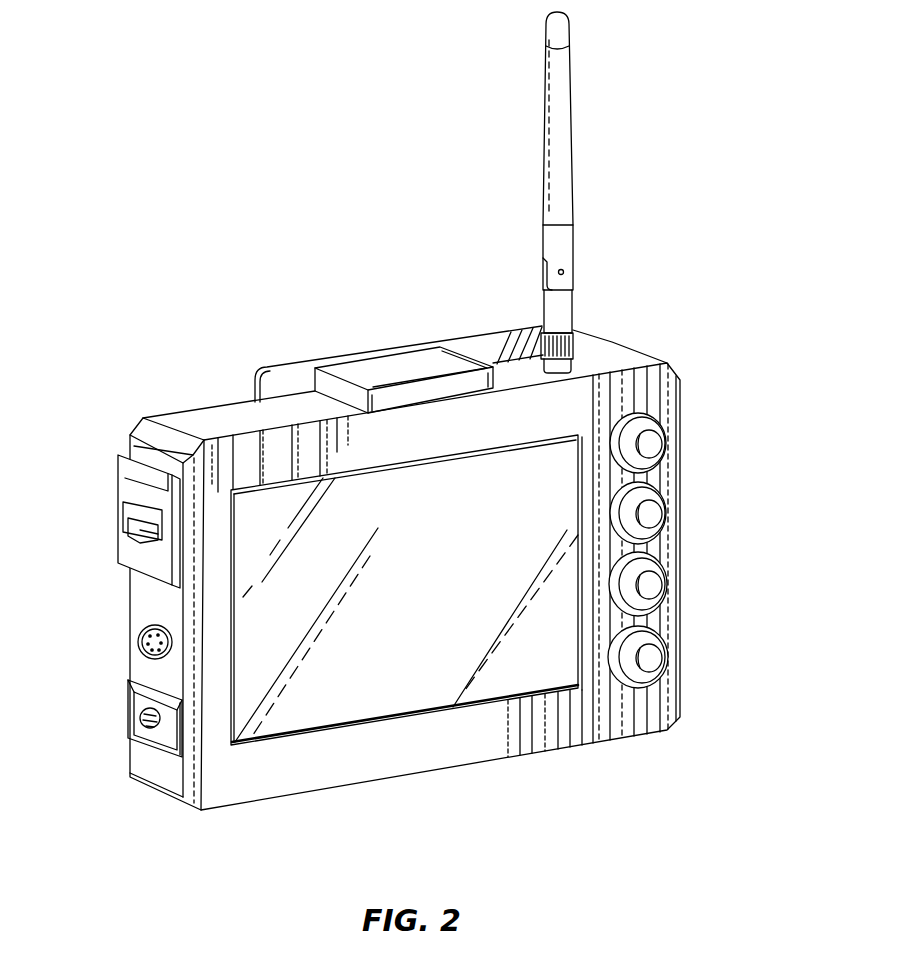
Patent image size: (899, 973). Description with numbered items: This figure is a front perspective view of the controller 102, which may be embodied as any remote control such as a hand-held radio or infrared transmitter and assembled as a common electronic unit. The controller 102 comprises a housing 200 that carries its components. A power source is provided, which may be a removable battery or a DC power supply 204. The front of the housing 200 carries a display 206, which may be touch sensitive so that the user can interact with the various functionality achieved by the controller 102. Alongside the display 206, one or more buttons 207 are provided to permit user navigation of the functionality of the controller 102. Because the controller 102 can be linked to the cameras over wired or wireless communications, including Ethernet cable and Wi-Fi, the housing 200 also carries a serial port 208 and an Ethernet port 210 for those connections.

The controller 102 is at (191, 82).
The housing 200 is at (243, 773).
The DC power supply 204 is at (150, 718).
The display 206 is at (436, 638).
The buttons 207 is at (658, 513).
The serial port 208 is at (143, 638).
The Ethernet port 210 is at (133, 528).